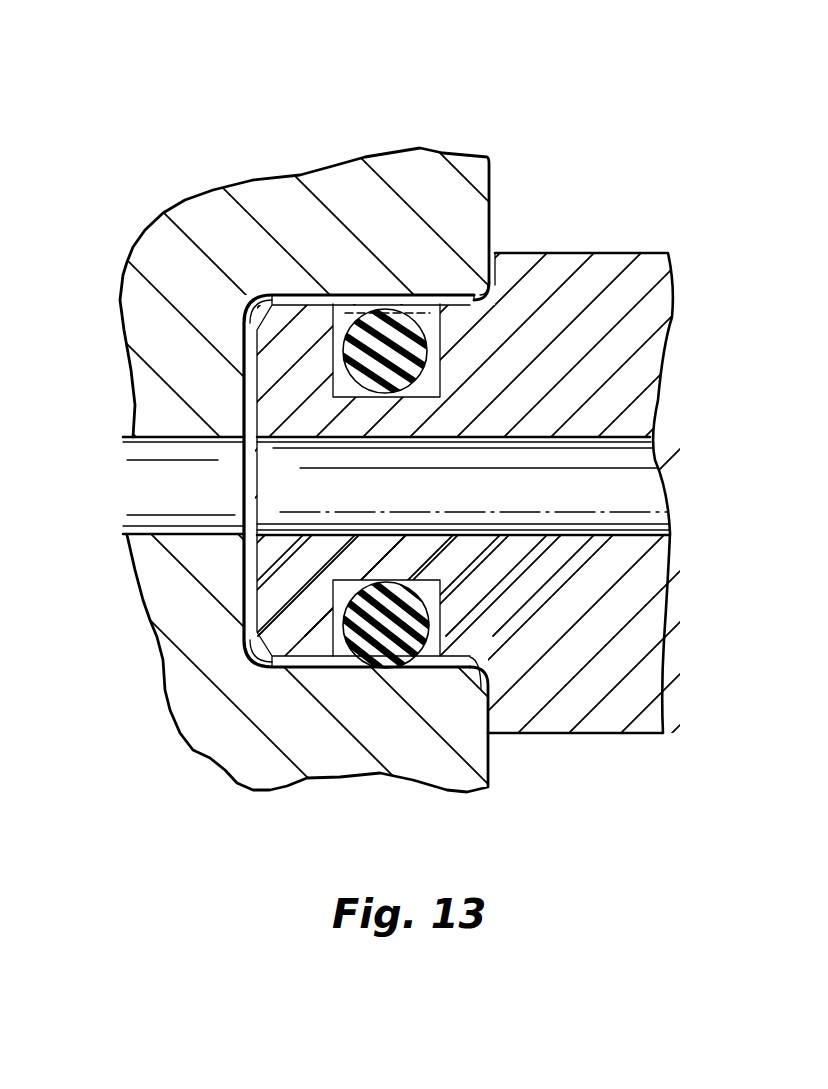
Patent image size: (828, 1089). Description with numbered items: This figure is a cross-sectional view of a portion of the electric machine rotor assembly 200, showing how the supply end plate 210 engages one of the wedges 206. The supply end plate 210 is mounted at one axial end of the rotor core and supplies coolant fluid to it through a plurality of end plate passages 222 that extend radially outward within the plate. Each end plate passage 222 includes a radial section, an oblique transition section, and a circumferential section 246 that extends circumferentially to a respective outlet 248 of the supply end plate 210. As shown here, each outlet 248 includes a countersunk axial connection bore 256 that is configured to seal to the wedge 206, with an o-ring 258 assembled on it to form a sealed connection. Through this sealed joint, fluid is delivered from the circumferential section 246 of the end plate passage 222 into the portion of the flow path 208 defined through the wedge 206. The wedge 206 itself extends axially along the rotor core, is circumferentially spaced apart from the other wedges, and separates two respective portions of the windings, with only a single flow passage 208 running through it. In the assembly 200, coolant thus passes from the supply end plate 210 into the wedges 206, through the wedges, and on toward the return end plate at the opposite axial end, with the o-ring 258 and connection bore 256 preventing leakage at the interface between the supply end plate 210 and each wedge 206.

The electric machine rotor assembly 200 is at (414, 416).
The wedge 206 is at (621, 265).
The flow passage 208 is at (648, 484).
The supply end plate 210 is at (258, 200).
The end plate passage 222 is at (359, 481).
The circumferential section 246 is at (254, 481).
The outlet 248 is at (506, 206).
The countersunk axial connection bore 256 is at (358, 292).
The o-ring 258 is at (374, 638).